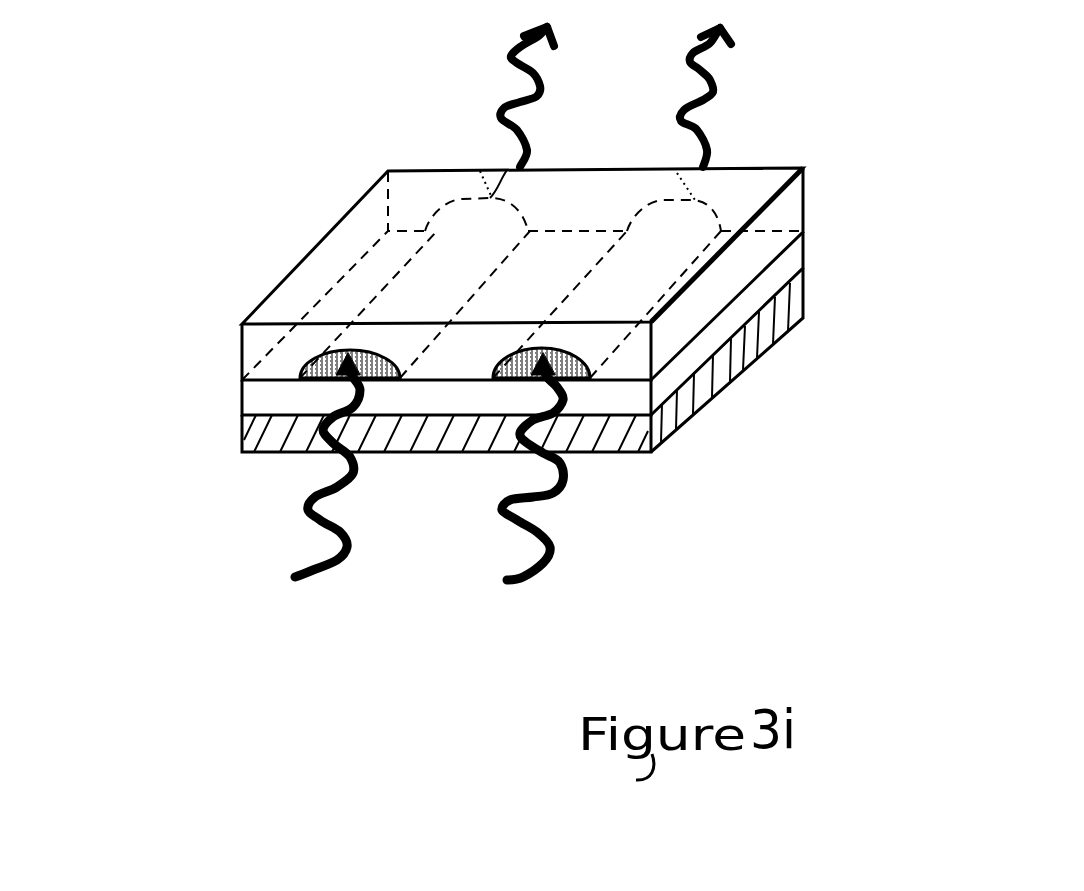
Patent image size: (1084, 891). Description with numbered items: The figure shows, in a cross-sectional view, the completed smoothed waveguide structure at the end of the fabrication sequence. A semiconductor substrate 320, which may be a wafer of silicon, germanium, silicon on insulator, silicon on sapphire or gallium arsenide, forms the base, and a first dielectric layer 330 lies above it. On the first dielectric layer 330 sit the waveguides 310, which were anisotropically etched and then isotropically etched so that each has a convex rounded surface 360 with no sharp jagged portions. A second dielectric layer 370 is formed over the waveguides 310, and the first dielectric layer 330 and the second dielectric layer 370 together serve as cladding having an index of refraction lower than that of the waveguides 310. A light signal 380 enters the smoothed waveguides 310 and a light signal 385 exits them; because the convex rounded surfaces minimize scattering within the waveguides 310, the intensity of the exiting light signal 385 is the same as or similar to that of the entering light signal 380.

The waveguides 310 is at (347, 362).
The semiconductor substrate 320 is at (803, 300).
The first dielectric layer 330 is at (803, 262).
The convex rounded surface 360 is at (752, 178).
The second dielectric layer 370 is at (803, 205).
The light signal entering the waveguides 380 is at (295, 536).
The light signal exiting the waveguides 385 is at (486, 81).